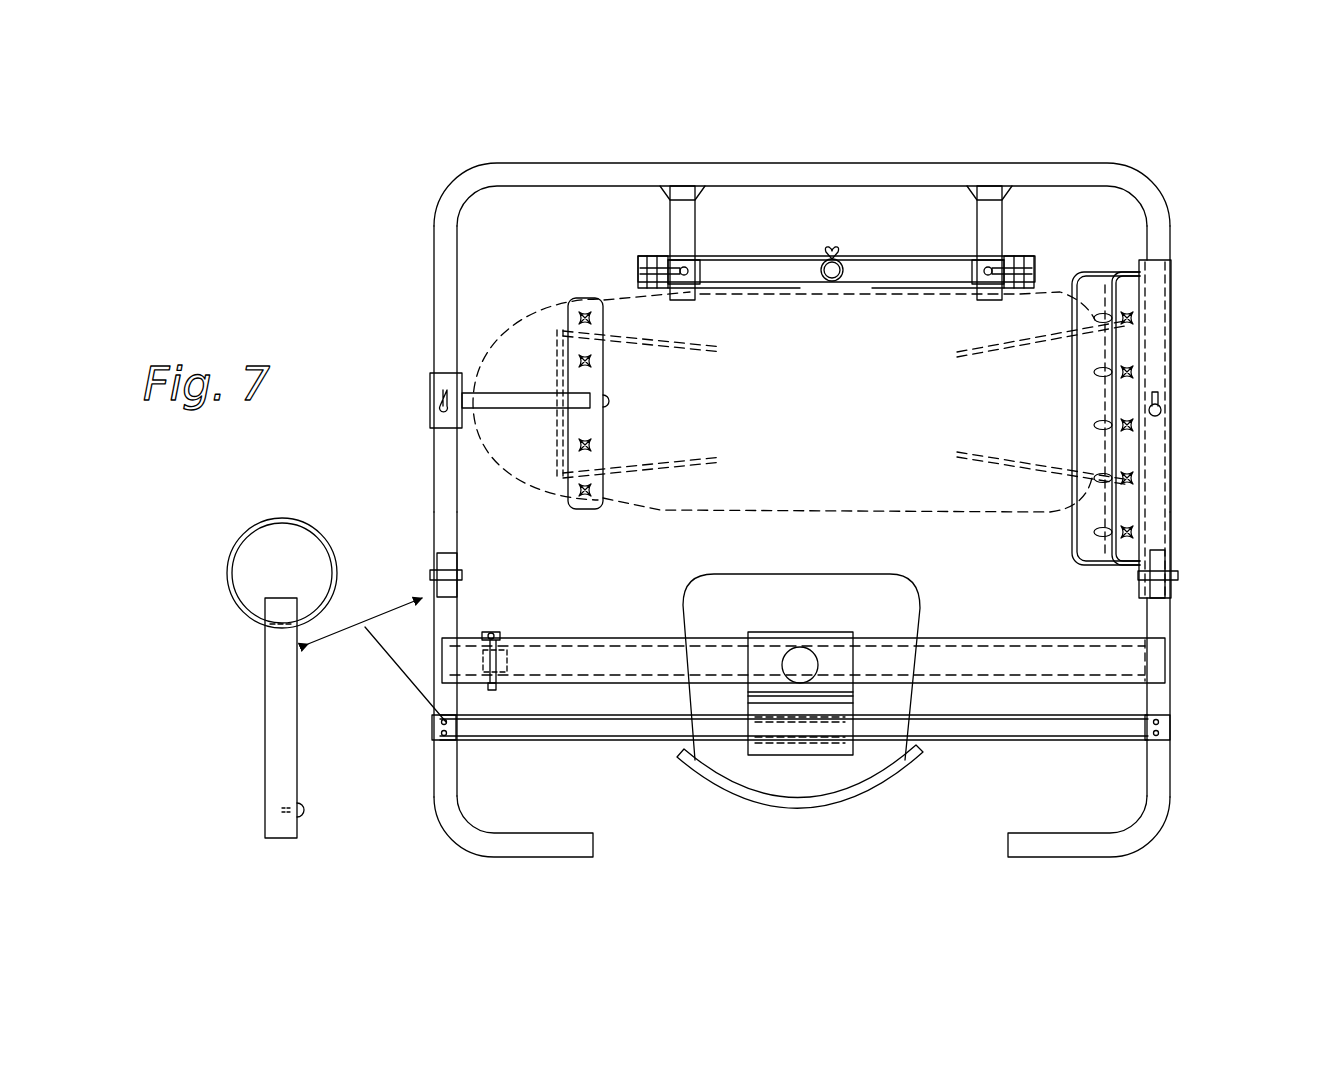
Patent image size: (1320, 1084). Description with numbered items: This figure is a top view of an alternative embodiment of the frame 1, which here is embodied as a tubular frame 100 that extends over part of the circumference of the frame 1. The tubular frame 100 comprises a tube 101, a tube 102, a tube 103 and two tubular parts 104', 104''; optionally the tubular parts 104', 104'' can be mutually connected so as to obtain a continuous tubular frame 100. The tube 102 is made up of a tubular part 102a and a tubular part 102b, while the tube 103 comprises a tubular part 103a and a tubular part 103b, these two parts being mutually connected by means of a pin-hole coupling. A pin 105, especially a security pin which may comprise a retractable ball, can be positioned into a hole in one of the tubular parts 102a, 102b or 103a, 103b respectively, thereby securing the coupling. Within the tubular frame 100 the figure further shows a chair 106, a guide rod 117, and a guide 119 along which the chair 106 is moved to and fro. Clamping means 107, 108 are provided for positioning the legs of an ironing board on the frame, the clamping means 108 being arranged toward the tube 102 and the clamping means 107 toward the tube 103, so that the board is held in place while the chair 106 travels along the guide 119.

The frame 1 is at (400, 152).
The tubular frame 100 is at (430, 248).
The tube 101 is at (560, 172).
The tube 102 is at (440, 463).
The tubular part 102a is at (434, 332).
The tubular part 102b is at (434, 758).
The tube 103 is at (1156, 620).
The tubular part 103a is at (1172, 243).
The tubular part 103b is at (1168, 694).
The tubular part 104' is at (513, 855).
The tubular part 104'' is at (1089, 855).
The pin 105 is at (258, 727).
The chair 106 is at (812, 782).
The clamping means 107 is at (1068, 537).
The clamping means 108 is at (578, 512).
The guide rod 117 is at (760, 272).
The guide 119 is at (986, 665).